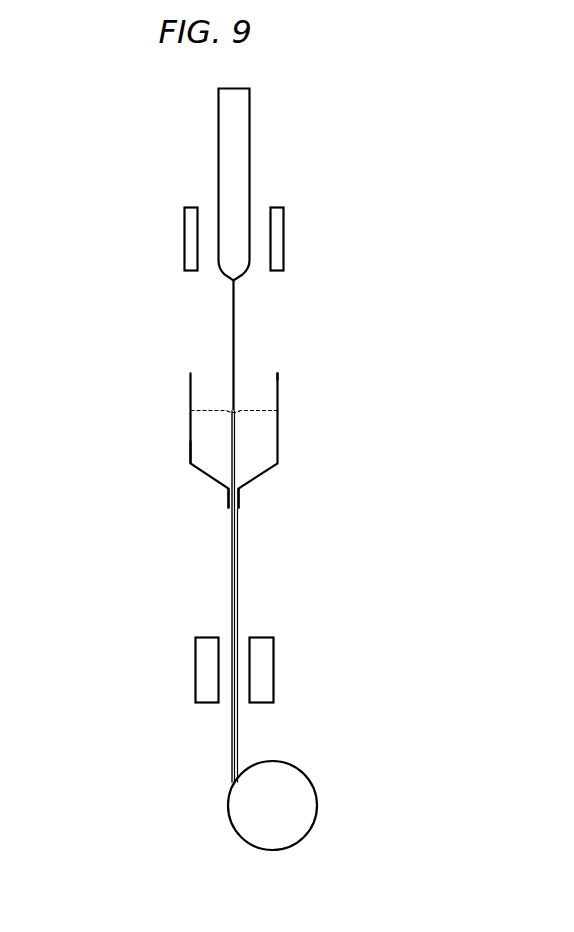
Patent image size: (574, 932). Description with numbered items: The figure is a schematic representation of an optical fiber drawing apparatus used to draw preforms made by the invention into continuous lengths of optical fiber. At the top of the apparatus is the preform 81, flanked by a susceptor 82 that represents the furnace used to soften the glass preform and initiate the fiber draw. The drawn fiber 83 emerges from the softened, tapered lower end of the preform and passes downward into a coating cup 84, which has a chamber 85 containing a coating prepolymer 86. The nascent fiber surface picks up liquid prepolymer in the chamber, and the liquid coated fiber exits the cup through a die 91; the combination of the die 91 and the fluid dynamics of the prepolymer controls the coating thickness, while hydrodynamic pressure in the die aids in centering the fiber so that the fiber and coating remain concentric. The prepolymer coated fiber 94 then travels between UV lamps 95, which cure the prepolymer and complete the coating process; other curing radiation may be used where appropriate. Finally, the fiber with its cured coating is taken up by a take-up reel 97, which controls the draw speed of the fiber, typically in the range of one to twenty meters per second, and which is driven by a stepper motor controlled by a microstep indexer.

The preform 81 is at (249, 140).
The susceptor 82 is at (283, 240).
The drawn fiber 83 is at (234, 314).
The coating cup 84 is at (345, 452).
The chamber 85 is at (277, 380).
The coating prepolymer 86 is at (200, 447).
The die 91 is at (228, 492).
The prepolymer coated fiber 94 is at (237, 590).
The UV lamps 95 is at (195, 672).
The take-up reel 97 is at (306, 778).